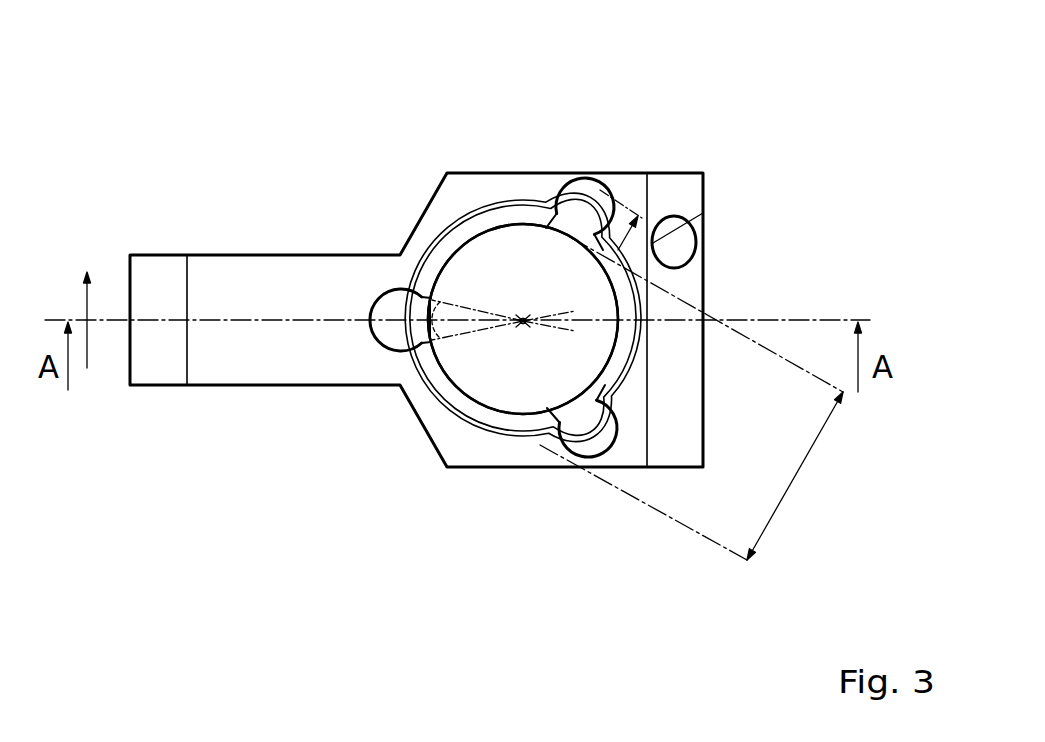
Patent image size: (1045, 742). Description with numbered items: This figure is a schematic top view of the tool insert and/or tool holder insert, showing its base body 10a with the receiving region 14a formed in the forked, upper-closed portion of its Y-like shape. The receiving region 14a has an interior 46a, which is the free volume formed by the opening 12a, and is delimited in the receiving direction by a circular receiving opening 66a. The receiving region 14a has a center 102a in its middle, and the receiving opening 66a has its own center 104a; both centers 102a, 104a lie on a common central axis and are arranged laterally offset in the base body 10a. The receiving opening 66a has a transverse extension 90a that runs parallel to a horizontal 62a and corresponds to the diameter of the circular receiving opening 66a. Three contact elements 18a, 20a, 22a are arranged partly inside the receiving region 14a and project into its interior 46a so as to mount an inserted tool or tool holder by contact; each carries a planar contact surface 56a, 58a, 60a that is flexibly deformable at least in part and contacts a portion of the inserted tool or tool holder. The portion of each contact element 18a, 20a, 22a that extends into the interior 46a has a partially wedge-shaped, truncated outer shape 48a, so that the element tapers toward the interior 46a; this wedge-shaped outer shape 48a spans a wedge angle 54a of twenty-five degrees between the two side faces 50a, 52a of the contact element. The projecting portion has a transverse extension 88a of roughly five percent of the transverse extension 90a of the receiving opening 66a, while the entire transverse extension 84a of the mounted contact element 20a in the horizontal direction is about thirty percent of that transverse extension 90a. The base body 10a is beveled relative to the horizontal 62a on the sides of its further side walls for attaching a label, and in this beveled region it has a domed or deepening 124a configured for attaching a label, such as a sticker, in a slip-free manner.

The base body 10a is at (232, 290).
The opening 12a is at (499, 270).
The receiving region 14a is at (523, 319).
The contact element 18a is at (380, 334).
The contact element 20a is at (583, 212).
The contact element 22a is at (582, 436).
The interior 46a is at (574, 303).
The wedge-shaped outer shape 48a is at (443, 296).
The side face 50a is at (416, 350).
The side face 52a is at (414, 230).
The wedge angle 54a is at (470, 322).
The contact surface 56a is at (452, 306).
The contact surface 58a is at (573, 245).
The contact surface 60a is at (612, 340).
The horizontal 62a is at (90, 292).
The receiving opening 66a is at (505, 352).
The entire transverse extension 84a is at (703, 213).
The transverse extension 88a is at (519, 206).
The transverse extension 90a is at (795, 481).
The center 102a is at (524, 324).
The center 104a is at (523, 321).
The domed or deepening 124a is at (683, 247).